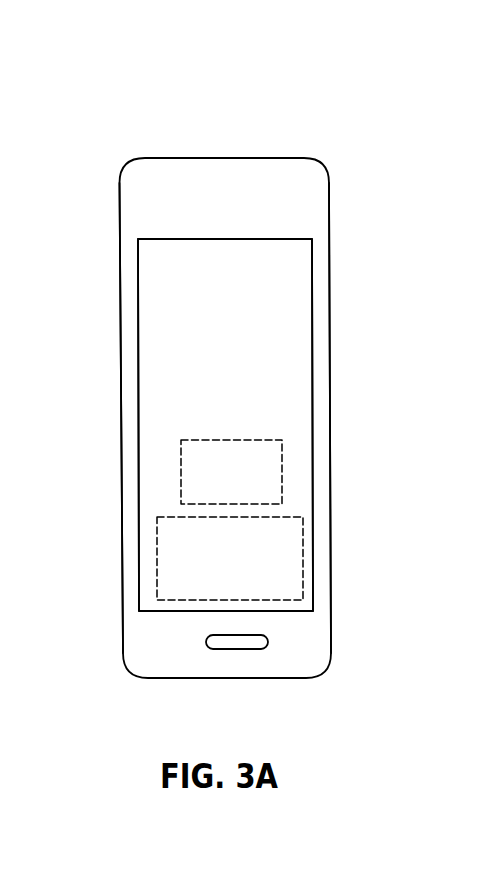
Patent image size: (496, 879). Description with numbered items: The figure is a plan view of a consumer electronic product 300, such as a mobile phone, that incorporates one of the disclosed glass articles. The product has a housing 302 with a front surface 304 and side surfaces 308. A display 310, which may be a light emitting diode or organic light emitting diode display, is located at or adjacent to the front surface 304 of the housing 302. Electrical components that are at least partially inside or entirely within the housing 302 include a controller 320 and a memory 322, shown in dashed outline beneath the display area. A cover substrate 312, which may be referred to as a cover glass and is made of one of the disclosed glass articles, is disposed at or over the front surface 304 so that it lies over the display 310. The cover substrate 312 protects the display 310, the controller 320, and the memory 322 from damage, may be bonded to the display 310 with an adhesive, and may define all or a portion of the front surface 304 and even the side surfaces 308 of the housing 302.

The consumer electronic product 300 is at (102, 89).
The housing 302 is at (130, 213).
The front surface 304 is at (315, 643).
The side surfaces 308 is at (120, 345).
The display 310 is at (288, 320).
The cover substrate 312 is at (165, 459).
The controller 320 is at (275, 572).
The memory 322 is at (248, 463).